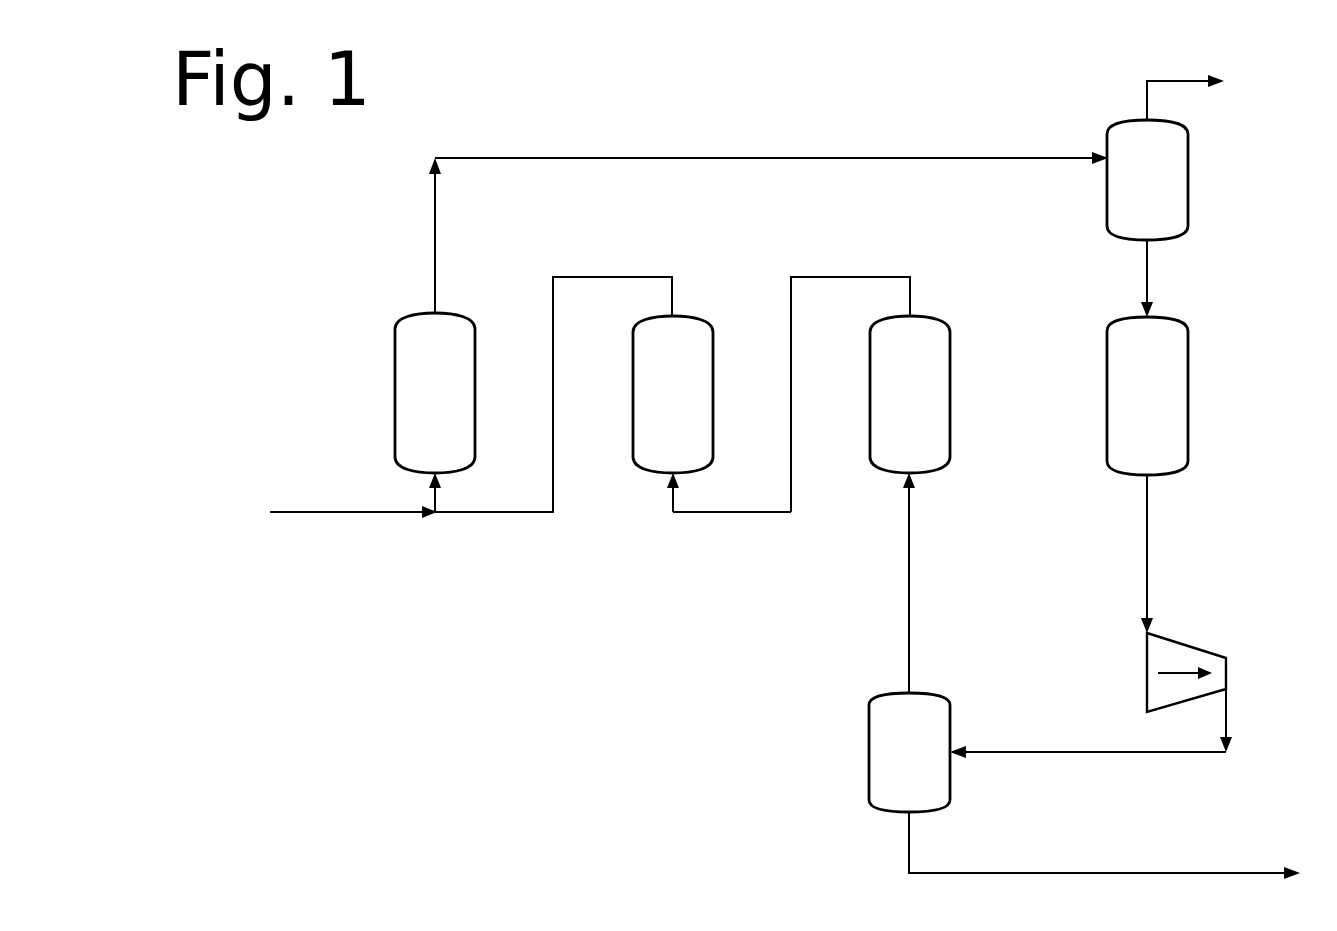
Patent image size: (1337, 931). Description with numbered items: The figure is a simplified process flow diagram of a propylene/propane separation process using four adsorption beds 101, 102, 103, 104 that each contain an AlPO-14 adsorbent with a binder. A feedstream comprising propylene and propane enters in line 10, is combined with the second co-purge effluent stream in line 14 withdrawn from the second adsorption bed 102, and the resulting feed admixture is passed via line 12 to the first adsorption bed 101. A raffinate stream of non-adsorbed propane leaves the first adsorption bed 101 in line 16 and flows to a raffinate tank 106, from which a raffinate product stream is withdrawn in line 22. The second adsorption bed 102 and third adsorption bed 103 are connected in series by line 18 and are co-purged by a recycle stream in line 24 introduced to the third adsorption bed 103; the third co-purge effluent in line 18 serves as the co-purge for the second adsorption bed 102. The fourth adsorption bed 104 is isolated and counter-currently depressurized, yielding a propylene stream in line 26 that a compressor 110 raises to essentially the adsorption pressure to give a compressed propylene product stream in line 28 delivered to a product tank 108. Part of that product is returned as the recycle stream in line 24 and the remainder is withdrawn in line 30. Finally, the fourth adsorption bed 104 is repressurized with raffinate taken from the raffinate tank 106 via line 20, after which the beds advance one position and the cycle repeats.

The line 10 is at (352, 511).
The line 12 is at (439, 508).
The line 14 is at (603, 276).
The line 16 is at (622, 157).
The line 18 is at (851, 276).
The line 20 is at (1150, 276).
The line 22 is at (1160, 80).
The line 24 is at (911, 518).
The line 26 is at (1149, 503).
The line 28 is at (1228, 702).
The line 30 is at (1108, 872).
The first adsorption bed 101 is at (412, 322).
The second adsorption bed 102 is at (655, 318).
The third adsorption bed 103 is at (898, 318).
The fourth adsorption bed 104 is at (1136, 318).
The raffinate tank 106 is at (1199, 150).
The product tank 108 is at (917, 690).
The compressor 110 is at (1168, 636).